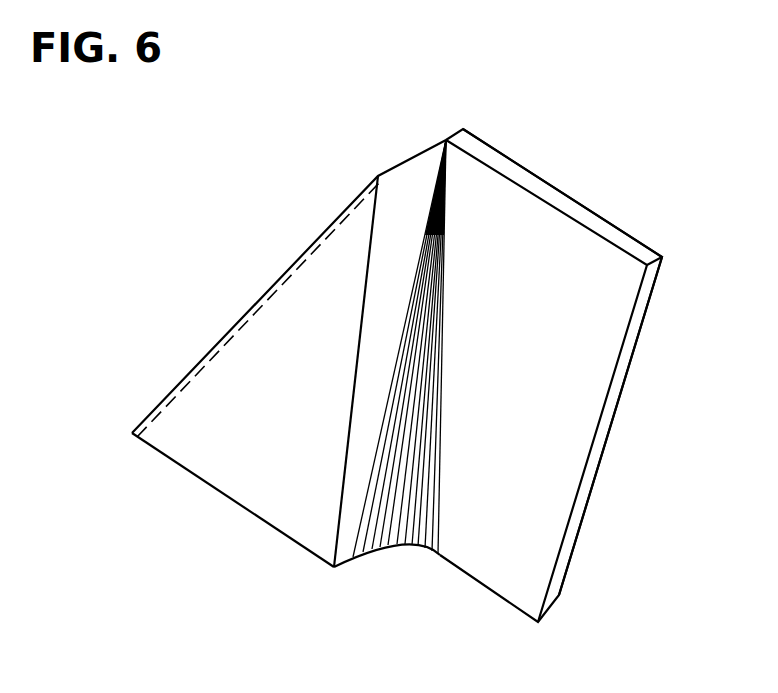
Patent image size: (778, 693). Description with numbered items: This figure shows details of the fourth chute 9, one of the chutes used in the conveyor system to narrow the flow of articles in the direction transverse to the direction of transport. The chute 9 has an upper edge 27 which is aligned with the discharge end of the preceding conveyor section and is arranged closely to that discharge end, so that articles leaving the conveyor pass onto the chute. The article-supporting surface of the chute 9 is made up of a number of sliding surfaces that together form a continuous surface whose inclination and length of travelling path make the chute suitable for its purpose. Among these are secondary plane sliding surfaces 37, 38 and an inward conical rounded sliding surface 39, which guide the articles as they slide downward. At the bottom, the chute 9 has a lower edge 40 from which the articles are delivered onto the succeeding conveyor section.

The fourth chute 9 is at (263, 160).
The upper edge 27 is at (587, 192).
The secondary plane sliding surface 37 is at (245, 353).
The secondary plane sliding surface 38 is at (417, 182).
The inward conical rounded sliding surface 39 is at (445, 234).
The lower edge 40 is at (430, 570).